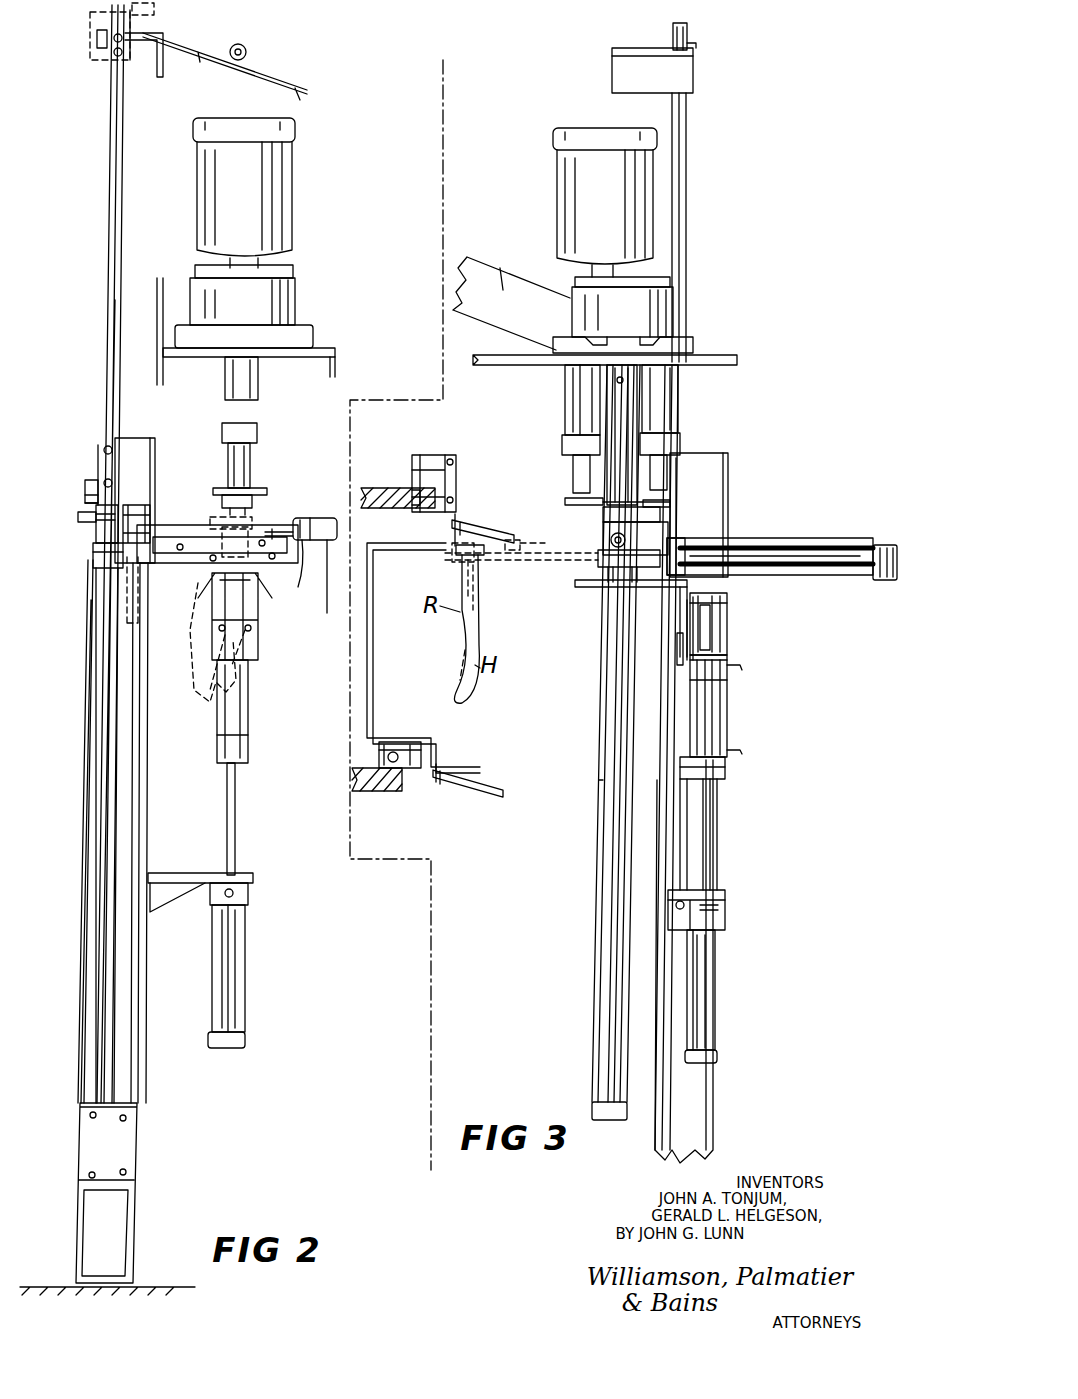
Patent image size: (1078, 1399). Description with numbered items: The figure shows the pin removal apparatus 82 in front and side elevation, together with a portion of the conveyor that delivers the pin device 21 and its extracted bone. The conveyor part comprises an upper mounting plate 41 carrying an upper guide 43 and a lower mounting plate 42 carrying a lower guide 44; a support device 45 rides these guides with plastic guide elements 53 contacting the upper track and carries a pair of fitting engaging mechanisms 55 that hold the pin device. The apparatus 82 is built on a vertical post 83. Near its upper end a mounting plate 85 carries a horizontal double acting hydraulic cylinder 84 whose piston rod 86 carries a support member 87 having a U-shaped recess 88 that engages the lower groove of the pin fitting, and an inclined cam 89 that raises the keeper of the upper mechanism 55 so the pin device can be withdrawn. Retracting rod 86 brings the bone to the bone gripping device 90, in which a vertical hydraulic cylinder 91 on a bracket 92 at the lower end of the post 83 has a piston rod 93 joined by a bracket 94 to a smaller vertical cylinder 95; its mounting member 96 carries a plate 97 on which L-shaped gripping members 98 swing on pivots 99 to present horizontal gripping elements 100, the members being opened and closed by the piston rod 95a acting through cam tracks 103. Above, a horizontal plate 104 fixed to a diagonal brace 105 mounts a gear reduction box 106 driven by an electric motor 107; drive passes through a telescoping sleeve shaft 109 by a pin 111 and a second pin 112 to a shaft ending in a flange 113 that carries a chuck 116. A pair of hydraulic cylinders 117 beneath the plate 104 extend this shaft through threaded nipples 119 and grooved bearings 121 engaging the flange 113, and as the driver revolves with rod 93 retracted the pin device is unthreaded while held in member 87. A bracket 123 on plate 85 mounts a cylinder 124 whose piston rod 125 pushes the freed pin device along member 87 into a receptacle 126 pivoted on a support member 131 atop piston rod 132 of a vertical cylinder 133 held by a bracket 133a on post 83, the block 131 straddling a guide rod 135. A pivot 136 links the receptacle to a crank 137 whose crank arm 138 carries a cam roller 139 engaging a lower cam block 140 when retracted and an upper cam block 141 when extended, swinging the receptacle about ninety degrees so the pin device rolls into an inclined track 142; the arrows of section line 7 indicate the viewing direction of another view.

In FIG. 3, the section line 7— 7 is at (850, 680).
In FIG. 2, the pin device 21 is at (258, 50).
In FIG. 3, the pin device 21 is at (460, 565).
In FIG. 3, the upper mounting plate 41 is at (390, 510).
In FIG. 3, the lower mounting plate 42 is at (382, 792).
In FIG. 3, the upper guide 43 is at (420, 490).
In FIG. 3, the lower guide 44 is at (396, 768).
In FIG. 3, the support device 45 is at (380, 665).
In FIG. 3, the guide elements 53 is at (414, 458).
In FIG. 3, the fitting engaging mechanism 55 is at (472, 520).
In FIG. 2, the pin removal apparatus 82 is at (360, 115).
In FIG. 3, the pin removal apparatus 82 is at (815, 118).
In FIG. 2, the post 83 is at (135, 1203).
In FIG. 3, the post 83 is at (714, 1108).
In FIG. 3, the double acting hydraulic cylinder 84 is at (873, 560).
In FIG. 2, the mounting plate 85 is at (205, 560).
In FIG. 3, the mounting plate 85 is at (690, 552).
In FIG. 3, the piston rod 86 is at (553, 560).
In FIG. 3, the support member 87 is at (660, 553).
In FIG. 2, the U-shaped recess 88 is at (176, 555).
In FIG. 2, the inclined cam 89 is at (222, 525).
In FIG. 2, the bone gripping device 90 is at (265, 670).
In FIG. 3, the bone gripping device 90 is at (615, 758).
In FIG. 2, the double acting hydraulic cylinder 91 is at (228, 978).
In FIG. 3, the double acting hydraulic cylinder 91 is at (705, 1028).
In FIG. 2, the bracket 92 is at (180, 873).
In FIG. 3, the bracket 92 is at (725, 920).
In FIG. 3, the piston rod 93 is at (712, 873).
In FIG. 2, the bracket 94 is at (227, 762).
In FIG. 3, the bracket 94 is at (720, 779).
In FIG. 3, the hydraulic cylinder 95 is at (710, 738).
In FIG. 3, the piston rod 95a is at (717, 620).
In FIG. 2, the mounting member 96 is at (248, 743).
In FIG. 3, the mounting member 96 is at (725, 768).
In FIG. 2, the plate 97 is at (255, 655).
In FIG. 3, the plate 97 is at (677, 655).
In FIG. 3, the gripping members 98 is at (687, 622).
In FIG. 3, the pivots 99 is at (687, 640).
In FIG. 3, the gripping element 100 is at (590, 587).
In FIG. 3, the cam tracks 103 is at (705, 633).
In FIG. 2, the plate 104 is at (333, 353).
In FIG. 3, the plate 104 is at (740, 358).
In FIG. 3, the diagonal brace 105 is at (502, 272).
In FIG. 2, the gear reduction box 106 is at (292, 292).
In FIG. 3, the gear reduction box 106 is at (668, 300).
In FIG. 2, the electric motor 107 is at (285, 172).
In FIG. 3, the electric motor 107 is at (558, 162).
In FIG. 3, the sleeve shaft 109 is at (565, 400).
In FIG. 3, the pin 111 is at (623, 380).
In FIG. 3, the second pin 112 is at (620, 448).
In FIG. 2, the flange 113 is at (250, 497).
In FIG. 3, the flange 113 is at (590, 497).
In FIG. 3, the chuck 116 is at (603, 517).
In FIG. 2, the double acting hydraulic cylinders 117 is at (255, 395).
In FIG. 3, the double acting hydraulic cylinders 117 is at (565, 430).
In FIG. 3, the nipple 119 is at (667, 495).
In FIG. 2, the bearing 121 is at (245, 490).
In FIG. 2, the bracket 123 is at (298, 576).
In FIG. 2, the double acting hydraulic cylinder 124 is at (327, 613).
In FIG. 2, the piston rod 125 is at (285, 530).
In FIG. 2, the receptacle 126 is at (170, 22).
In FIG. 2, the support member 131 is at (100, 530).
In FIG. 2, the piston rod 132 is at (105, 555).
In FIG. 2, the double acting hydraulic cylinder 133 is at (105, 733).
In FIG. 3, the double acting hydraulic cylinder 133 is at (607, 905).
In FIG. 2, the bracket 133a is at (100, 575).
In FIG. 2, the guide rod 135 is at (112, 130).
In FIG. 3, the guide rod 135 is at (688, 160).
In FIG. 2, the pivot 136 is at (85, 520).
In FIG. 2, the crank 137 is at (118, 470).
In FIG. 2, the crank arm 138 is at (87, 493).
In FIG. 2, the cam roller 139 is at (97, 487).
In FIG. 2, the lower cam block 140 is at (90, 503).
In FIG. 2, the upper cam block 141 is at (97, 38).
In FIG. 2, the inclined track 142 is at (285, 78).